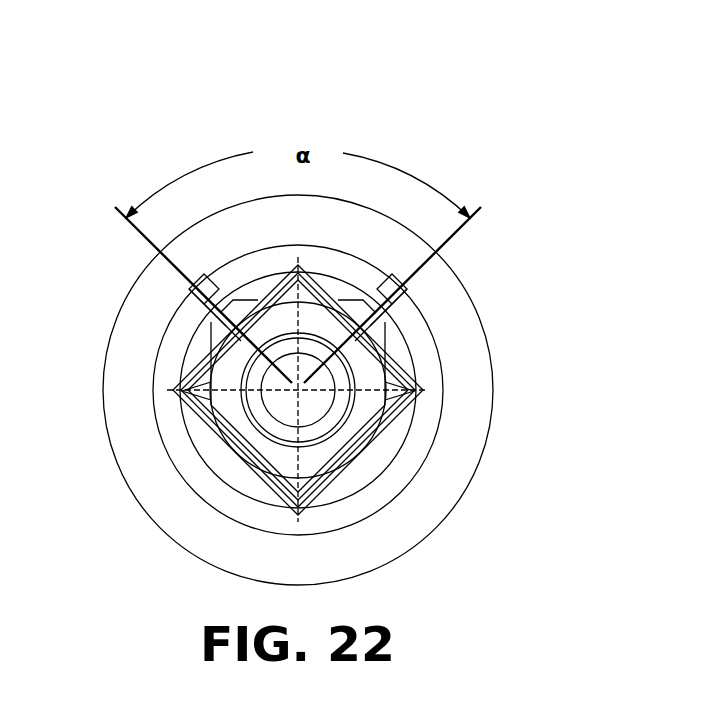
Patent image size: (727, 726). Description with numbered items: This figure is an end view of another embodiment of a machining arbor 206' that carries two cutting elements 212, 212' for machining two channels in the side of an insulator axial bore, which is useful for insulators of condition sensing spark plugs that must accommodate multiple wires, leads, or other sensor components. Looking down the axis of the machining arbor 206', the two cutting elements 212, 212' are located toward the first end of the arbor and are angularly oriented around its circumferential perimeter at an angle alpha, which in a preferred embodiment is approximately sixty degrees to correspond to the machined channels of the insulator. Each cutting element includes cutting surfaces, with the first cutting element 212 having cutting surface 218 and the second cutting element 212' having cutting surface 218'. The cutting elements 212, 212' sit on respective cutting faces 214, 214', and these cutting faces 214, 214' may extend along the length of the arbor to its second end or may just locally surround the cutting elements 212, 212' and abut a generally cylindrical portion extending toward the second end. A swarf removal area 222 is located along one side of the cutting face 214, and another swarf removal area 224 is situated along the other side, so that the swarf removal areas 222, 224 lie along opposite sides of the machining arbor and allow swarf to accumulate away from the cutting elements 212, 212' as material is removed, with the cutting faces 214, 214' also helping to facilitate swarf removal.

The machining arbor 206' is at (378, 308).
The cutting element 212' is at (143, 287).
The cutting element 212 is at (441, 295).
The cutting surface 218' is at (145, 311).
The cutting surface 218 is at (447, 305).
The cutting face 214' is at (114, 363).
The cutting face 214 is at (477, 363).
The swarf removal area 222 is at (388, 418).
The swarf removal area 224 is at (210, 428).